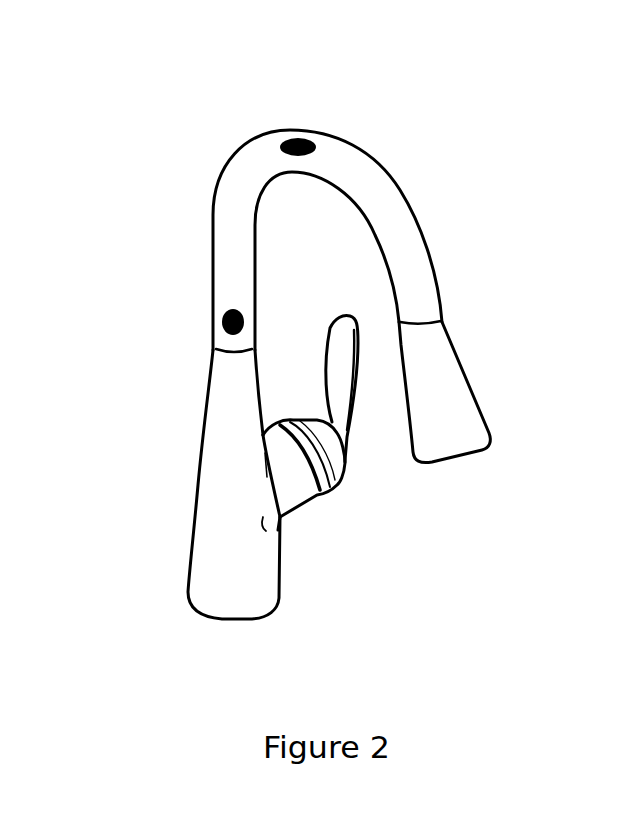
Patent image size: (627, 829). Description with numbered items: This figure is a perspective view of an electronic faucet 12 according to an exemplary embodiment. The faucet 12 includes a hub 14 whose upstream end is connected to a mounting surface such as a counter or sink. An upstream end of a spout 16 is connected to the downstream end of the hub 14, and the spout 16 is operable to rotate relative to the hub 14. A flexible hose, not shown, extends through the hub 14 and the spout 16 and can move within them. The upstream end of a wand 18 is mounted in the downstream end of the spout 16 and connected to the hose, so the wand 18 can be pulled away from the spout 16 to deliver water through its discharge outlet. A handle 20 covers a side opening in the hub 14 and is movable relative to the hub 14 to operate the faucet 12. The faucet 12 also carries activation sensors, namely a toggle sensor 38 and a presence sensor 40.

The faucet 12 is at (175, 123).
The hub 14 is at (198, 483).
The spout 16 is at (415, 228).
The wand 18 is at (470, 378).
The handle 20 is at (347, 462).
The toggle sensor 38 is at (305, 134).
The presence sensor 40 is at (222, 325).